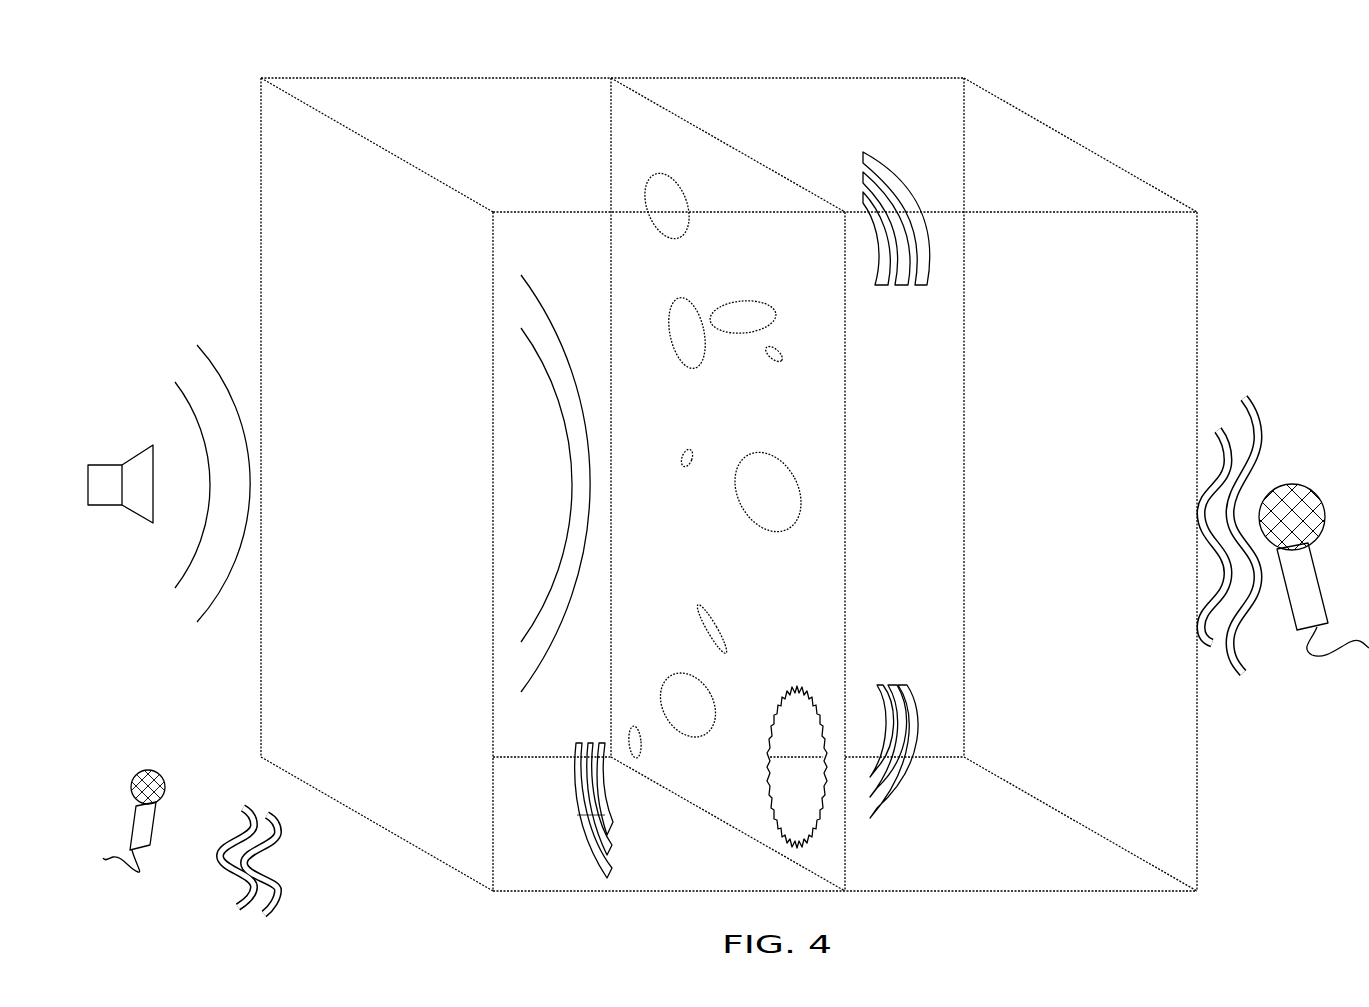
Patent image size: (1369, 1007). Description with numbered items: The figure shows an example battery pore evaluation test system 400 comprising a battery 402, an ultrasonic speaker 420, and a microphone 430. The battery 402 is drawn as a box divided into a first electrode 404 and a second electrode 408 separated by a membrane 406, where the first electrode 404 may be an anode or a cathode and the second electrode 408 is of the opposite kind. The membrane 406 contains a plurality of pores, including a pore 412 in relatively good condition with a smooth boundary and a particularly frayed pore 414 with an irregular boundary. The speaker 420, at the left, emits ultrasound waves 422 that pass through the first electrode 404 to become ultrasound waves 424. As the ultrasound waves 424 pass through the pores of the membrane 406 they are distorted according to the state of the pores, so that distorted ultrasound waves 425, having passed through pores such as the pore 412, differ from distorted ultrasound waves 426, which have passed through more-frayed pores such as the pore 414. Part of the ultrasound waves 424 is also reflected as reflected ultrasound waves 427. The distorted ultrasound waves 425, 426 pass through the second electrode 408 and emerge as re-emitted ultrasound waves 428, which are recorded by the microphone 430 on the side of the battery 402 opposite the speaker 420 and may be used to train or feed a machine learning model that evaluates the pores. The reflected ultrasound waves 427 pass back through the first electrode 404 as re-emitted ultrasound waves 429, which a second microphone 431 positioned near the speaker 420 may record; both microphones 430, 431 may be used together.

The battery pore evaluation test system 400 is at (1243, 64).
The battery 402 is at (261, 133).
The first electrode 404 is at (288, 330).
The membrane 406 is at (643, 285).
The second electrode 408 is at (993, 433).
The pore 412 is at (690, 347).
The pore 414 is at (790, 778).
The ultrasonic speaker 420 is at (103, 505).
The ultrasound waves 422 is at (207, 620).
The ultrasound waves 424 is at (533, 683).
The distorted ultrasound waves 425 is at (875, 283).
The distorted ultrasound waves 426 is at (878, 685).
The reflected ultrasound waves 427 is at (576, 818).
The re-emitted ultrasound waves 428 is at (1257, 415).
The re-emitted ultrasound waves 429 is at (238, 807).
The microphone 430 is at (1307, 627).
The microphone 431 is at (138, 835).